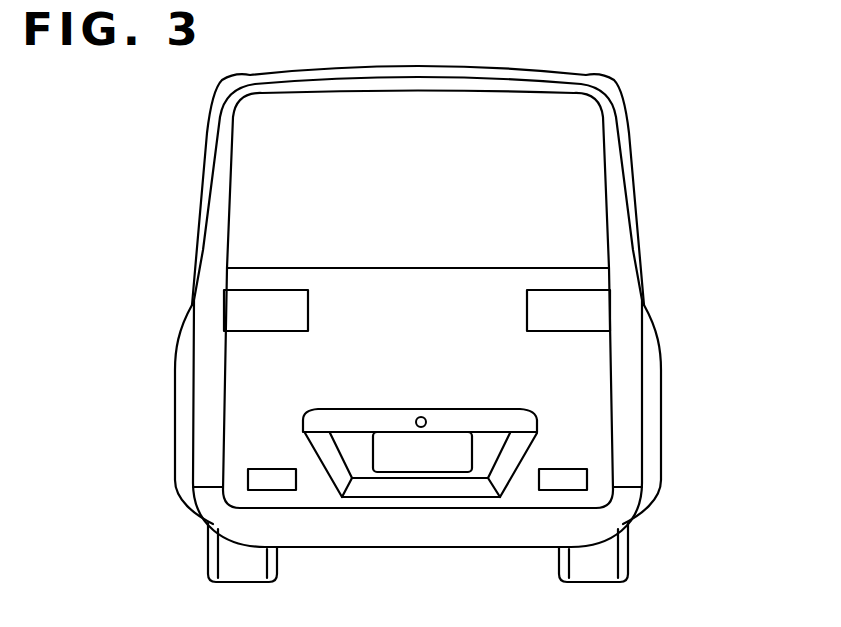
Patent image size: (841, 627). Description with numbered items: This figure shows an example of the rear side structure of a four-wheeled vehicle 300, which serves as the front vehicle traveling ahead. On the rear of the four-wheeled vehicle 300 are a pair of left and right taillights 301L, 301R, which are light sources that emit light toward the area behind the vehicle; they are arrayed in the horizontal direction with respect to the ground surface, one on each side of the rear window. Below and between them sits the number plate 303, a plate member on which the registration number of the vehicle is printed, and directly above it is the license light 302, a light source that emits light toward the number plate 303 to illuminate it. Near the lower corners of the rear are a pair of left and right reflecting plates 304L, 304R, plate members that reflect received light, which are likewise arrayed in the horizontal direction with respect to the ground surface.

The four-wheeled vehicle 300 is at (670, 66).
The left taillight 301L is at (237, 312).
The right taillight 301R is at (600, 312).
The license light 302 is at (433, 410).
The number plate 303 is at (463, 453).
The left reflecting plate 304L is at (255, 478).
The right reflecting plate 304R is at (577, 482).